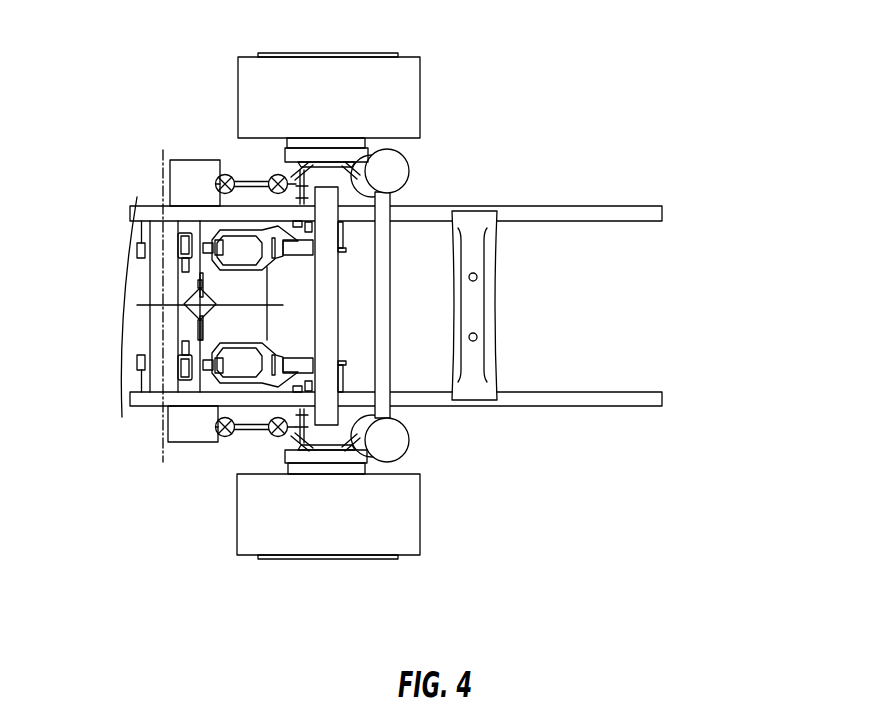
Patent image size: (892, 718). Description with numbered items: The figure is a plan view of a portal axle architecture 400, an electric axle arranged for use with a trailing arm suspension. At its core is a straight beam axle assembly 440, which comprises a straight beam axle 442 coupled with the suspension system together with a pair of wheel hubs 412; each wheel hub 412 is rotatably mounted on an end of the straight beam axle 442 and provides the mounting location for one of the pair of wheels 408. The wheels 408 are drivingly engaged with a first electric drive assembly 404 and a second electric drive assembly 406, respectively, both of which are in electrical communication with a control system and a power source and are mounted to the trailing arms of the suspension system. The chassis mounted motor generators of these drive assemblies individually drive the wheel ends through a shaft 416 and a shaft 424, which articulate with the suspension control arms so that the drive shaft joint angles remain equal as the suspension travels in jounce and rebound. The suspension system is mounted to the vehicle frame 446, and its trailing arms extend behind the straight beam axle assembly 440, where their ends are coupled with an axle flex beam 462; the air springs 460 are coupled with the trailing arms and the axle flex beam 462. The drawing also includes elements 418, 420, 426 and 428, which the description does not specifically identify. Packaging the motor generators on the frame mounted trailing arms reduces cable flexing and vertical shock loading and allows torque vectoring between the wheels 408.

The portal axle architecture 400 is at (735, 430).
The first electric drive assembly 404 is at (160, 442).
The second electric drive assembly 406 is at (160, 180).
The wheels 408 is at (402, 78).
The wheel hubs 412 is at (312, 142).
The shaft 416 is at (225, 436).
The lower rail 418 is at (308, 427).
The lower bearing housing 420 is at (400, 425).
The shaft 424 is at (250, 184).
The upper rail 426 is at (307, 185).
The upper bearing housing 428 is at (410, 180).
The straight beam axle assembly 440 is at (360, 352).
The straight beam axle 442 is at (340, 293).
The vehicle frame 446 is at (578, 213).
The air springs 460 is at (398, 170).
The axle flex beam 462 is at (380, 301).